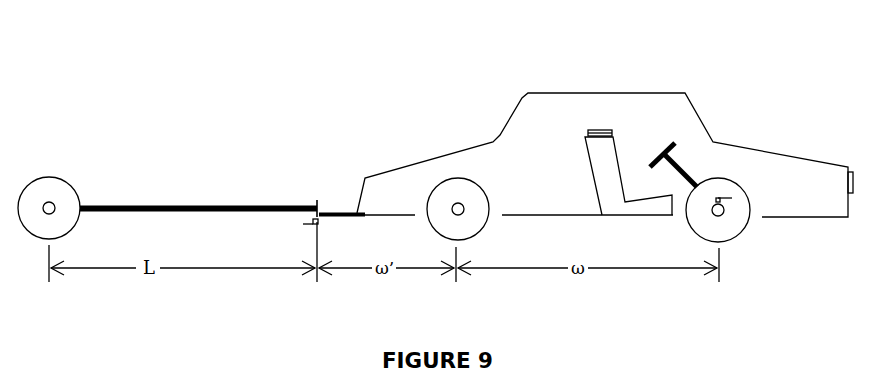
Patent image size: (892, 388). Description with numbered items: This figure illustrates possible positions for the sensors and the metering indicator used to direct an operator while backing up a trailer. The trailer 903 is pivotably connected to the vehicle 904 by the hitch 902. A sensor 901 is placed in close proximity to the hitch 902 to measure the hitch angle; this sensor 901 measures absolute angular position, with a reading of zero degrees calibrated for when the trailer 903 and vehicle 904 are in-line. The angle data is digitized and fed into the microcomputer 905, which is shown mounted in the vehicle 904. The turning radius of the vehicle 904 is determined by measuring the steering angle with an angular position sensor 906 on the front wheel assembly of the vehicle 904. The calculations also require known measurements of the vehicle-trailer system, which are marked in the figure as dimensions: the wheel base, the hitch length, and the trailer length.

The sensor 901 is at (300, 222).
The hitch 902 is at (315, 197).
The trailer 903 is at (183, 198).
The vehicle 904 is at (515, 98).
The microcomputer 905 is at (603, 128).
The angular position sensor 906 is at (720, 197).